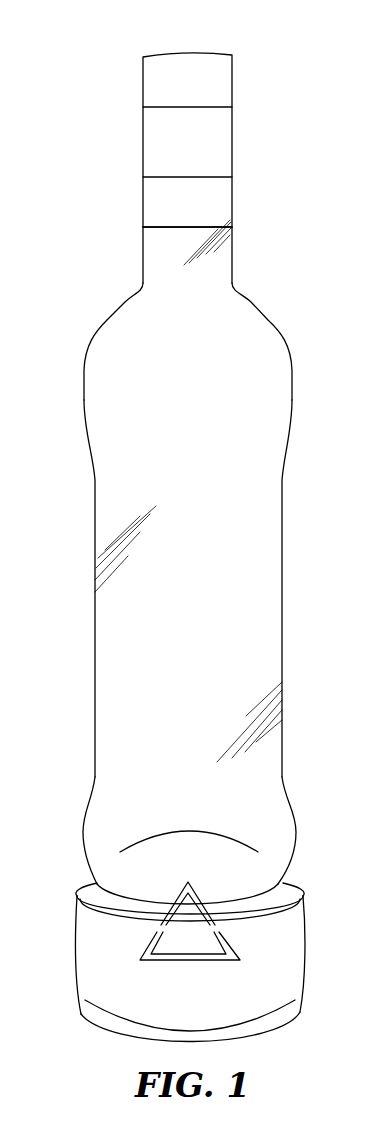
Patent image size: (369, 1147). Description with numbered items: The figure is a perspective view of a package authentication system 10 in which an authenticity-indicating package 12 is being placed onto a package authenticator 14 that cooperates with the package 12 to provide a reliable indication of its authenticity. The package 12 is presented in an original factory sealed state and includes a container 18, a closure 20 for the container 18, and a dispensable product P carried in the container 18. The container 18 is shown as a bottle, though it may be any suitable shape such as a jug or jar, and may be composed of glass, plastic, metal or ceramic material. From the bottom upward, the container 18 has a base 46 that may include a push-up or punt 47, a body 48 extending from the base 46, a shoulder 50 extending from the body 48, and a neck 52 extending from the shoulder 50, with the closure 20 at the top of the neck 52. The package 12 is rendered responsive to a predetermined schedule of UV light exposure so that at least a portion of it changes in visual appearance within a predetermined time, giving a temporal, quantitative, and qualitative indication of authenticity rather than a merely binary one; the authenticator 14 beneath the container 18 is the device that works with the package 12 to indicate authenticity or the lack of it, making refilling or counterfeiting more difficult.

The package authentication system 10 is at (198, 525).
The authenticity-indicating package 12 is at (205, 461).
The package authenticator 14 is at (192, 919).
The container 18 is at (77, 621).
The closure 20 is at (236, 51).
The base 46 is at (270, 901).
The punt 47 is at (228, 831).
The body 48 is at (95, 674).
The shoulder 50 is at (107, 320).
The neck 52 is at (233, 257).
The dispensable product P is at (181, 226).